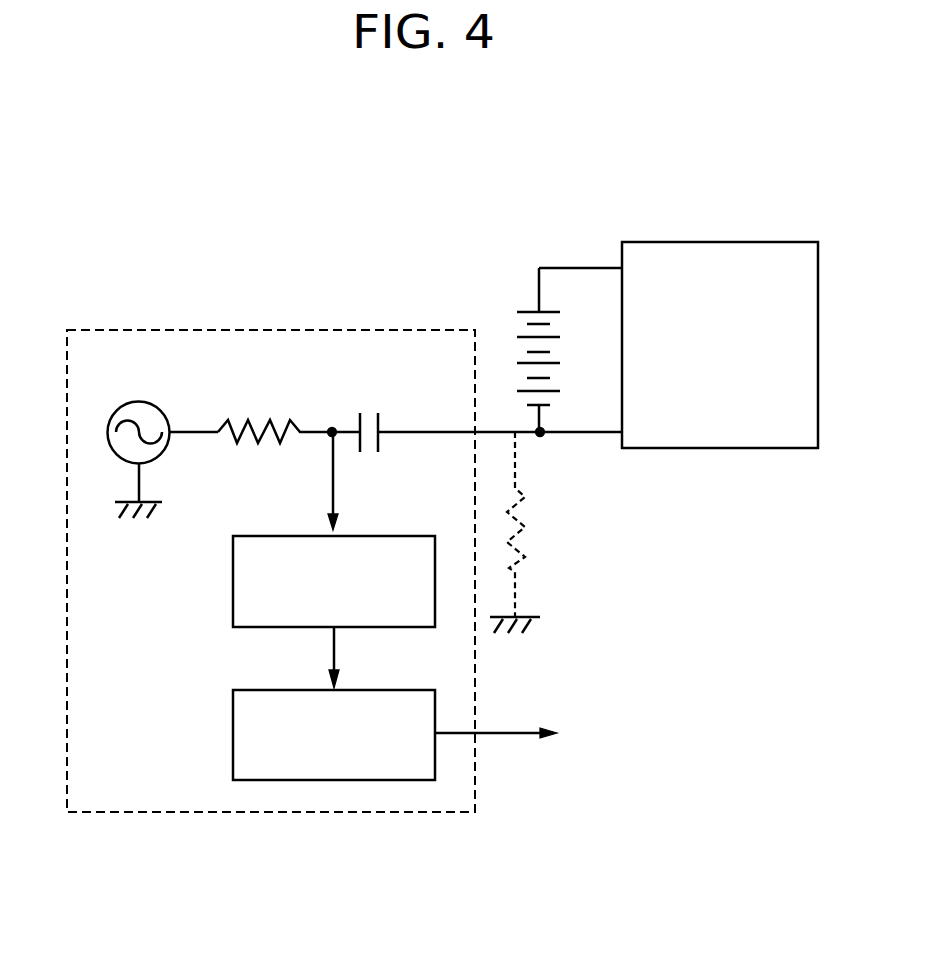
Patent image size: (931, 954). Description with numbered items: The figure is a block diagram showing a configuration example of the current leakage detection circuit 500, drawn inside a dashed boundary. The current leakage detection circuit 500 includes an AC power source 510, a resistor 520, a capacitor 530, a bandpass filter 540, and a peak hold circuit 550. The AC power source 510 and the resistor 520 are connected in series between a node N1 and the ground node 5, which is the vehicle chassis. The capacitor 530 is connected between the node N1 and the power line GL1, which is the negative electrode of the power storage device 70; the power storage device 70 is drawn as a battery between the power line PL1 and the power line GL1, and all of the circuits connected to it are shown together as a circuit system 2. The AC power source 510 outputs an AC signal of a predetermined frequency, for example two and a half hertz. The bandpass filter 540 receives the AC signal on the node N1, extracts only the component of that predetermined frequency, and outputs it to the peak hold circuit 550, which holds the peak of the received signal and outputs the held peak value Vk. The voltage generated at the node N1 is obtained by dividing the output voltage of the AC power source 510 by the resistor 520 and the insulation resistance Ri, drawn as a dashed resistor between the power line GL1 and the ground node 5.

The circuit system 2 is at (719, 242).
The ground node 5 is at (128, 501).
The power storage device 70 is at (520, 331).
The current leakage detection circuit 500 is at (318, 330).
The AC power source 510 is at (152, 403).
The resistor 520 is at (247, 442).
The capacitor 530 is at (382, 422).
The bandpass filter 540 is at (388, 537).
The peak hold circuit 550 is at (388, 690).
The node N1 is at (333, 428).
The power line PL1 is at (563, 267).
The power line GL1 is at (567, 434).
The insulation resistance Ri is at (534, 524).
The held peak value Vk is at (516, 733).